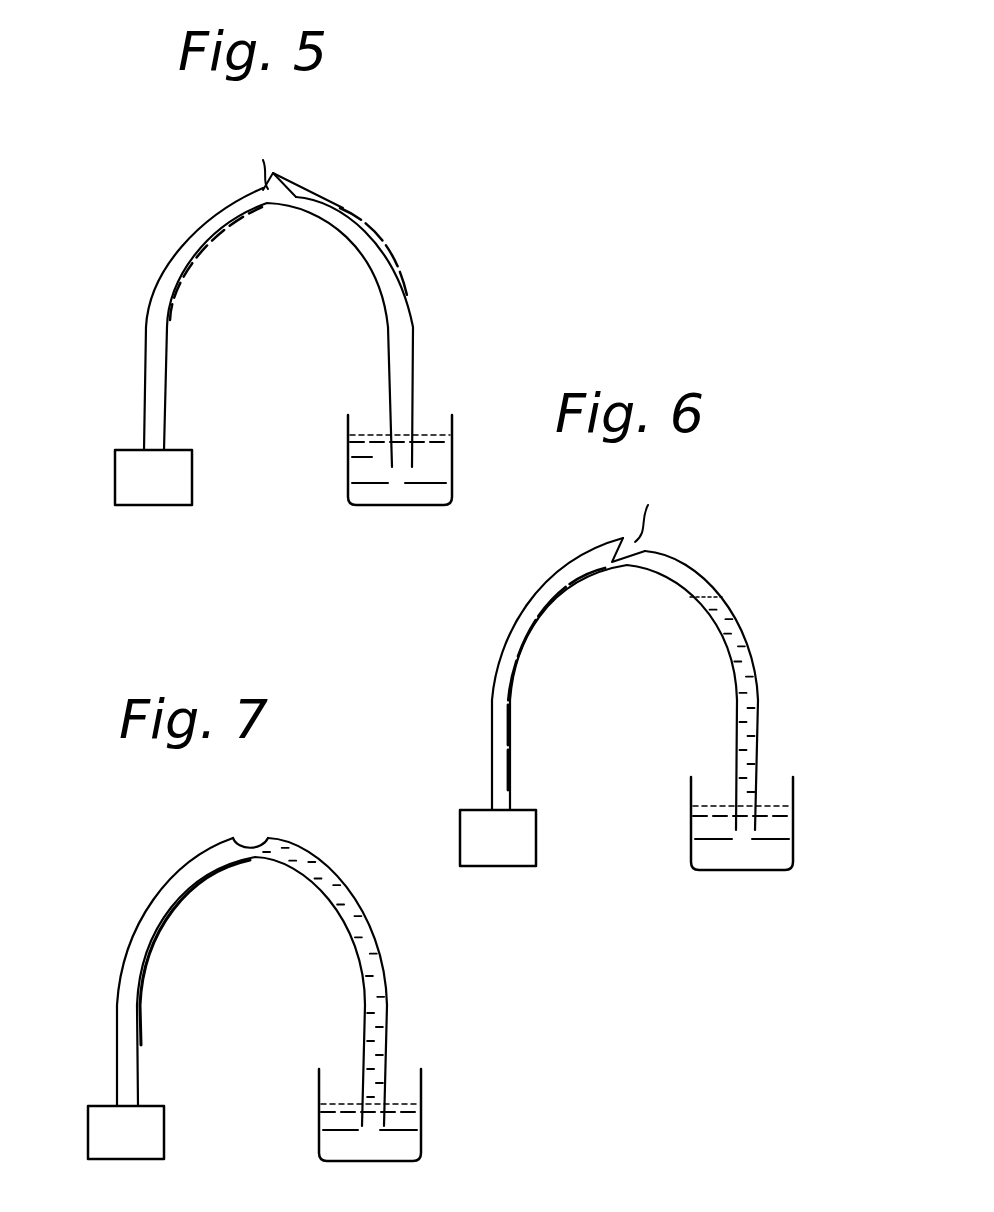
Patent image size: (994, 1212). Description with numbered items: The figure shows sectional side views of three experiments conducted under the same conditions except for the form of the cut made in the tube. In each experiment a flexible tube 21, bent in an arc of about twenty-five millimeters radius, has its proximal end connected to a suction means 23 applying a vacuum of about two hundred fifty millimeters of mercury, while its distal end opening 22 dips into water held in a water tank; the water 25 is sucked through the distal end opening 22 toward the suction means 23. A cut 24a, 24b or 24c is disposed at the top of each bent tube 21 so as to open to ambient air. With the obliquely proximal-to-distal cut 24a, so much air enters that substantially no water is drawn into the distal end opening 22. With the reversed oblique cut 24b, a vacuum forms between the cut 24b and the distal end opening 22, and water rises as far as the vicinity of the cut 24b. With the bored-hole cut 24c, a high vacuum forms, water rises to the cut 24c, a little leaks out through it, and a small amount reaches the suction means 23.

In FIG. 5, the flexible tube 21 is at (152, 317).
In FIG. 6, the flexible tube 21 is at (503, 678).
In FIG. 7, the flexible tube 21 is at (125, 969).
In FIG. 5, the distal end opening 22 is at (407, 456).
In FIG. 6, the distal end opening 22 is at (755, 818).
In FIG. 7, the distal end opening 22 is at (383, 1120).
In FIG. 5, the suction means 23 is at (122, 480).
In FIG. 6, the suction means 23 is at (468, 830).
In FIG. 7, the suction means 23 is at (96, 1130).
In FIG. 5, the cut 24a is at (273, 205).
In FIG. 6, the cut 24b is at (633, 568).
In FIG. 7, the cut 24c is at (252, 850).
In FIG. 5, the liquid 25 is at (348, 460).
In FIG. 6, the liquid 25 is at (691, 820).
In FIG. 7, the liquid 25 is at (319, 1110).